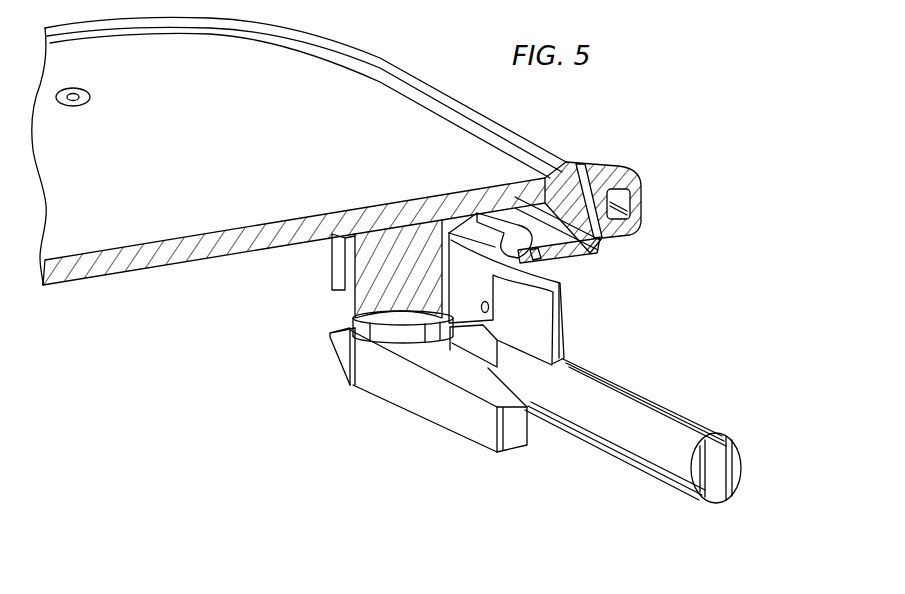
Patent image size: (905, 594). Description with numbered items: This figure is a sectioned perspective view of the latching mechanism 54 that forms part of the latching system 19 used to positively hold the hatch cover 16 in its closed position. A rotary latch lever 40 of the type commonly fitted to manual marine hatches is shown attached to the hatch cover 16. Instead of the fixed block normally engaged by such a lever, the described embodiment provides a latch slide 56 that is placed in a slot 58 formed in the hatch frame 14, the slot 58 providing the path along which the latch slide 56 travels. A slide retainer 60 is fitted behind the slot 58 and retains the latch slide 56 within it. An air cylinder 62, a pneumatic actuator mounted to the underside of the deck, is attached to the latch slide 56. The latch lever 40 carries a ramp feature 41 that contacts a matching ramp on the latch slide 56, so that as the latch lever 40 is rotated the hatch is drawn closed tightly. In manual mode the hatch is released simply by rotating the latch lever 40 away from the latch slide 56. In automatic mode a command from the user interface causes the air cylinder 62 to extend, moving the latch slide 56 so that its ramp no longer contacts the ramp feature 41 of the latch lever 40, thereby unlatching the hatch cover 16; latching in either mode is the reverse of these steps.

The hatch cover 16 is at (380, 55).
The hatch frame 14 is at (628, 254).
The latching mechanism 54 is at (628, 270).
The slide retainer 60 is at (535, 255).
The slot 58 is at (550, 283).
The latching system 19 is at (615, 323).
The latch slide 56 is at (564, 350).
The latch lever 40 is at (438, 415).
The ramp feature 41 is at (330, 351).
The air cylinder 62 is at (717, 486).